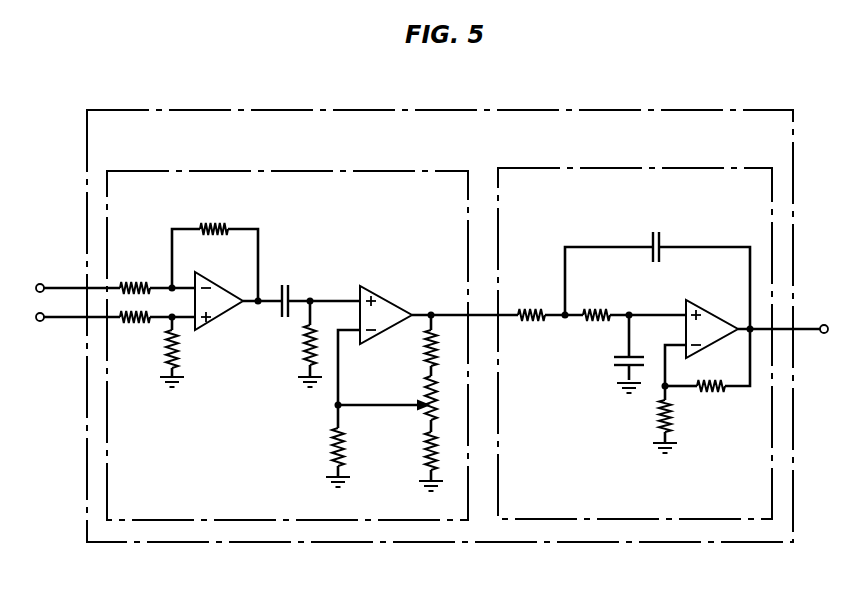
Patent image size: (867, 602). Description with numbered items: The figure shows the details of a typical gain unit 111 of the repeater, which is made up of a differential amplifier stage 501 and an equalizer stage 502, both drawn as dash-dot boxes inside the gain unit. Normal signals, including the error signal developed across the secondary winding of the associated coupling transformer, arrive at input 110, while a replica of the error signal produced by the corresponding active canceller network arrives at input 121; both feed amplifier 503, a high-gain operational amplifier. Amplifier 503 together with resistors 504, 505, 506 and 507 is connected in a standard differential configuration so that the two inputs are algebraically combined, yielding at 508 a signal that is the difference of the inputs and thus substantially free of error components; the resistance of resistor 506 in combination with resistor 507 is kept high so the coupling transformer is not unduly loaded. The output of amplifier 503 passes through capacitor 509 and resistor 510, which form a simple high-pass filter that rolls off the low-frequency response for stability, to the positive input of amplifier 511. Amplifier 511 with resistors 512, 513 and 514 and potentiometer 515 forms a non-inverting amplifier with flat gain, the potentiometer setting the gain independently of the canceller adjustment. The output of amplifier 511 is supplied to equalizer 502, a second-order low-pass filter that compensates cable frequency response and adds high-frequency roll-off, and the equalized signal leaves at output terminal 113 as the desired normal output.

The gain unit 111 is at (642, 109).
The differential amplifier stage 501 is at (208, 170).
The equalizer stage 502 is at (665, 168).
The input 121 is at (40, 283).
The input 110 is at (41, 322).
The output terminal 113 is at (821, 324).
The amplifier 503 is at (215, 318).
The resistor 504 is at (132, 282).
The resistor 505 is at (222, 226).
The resistor 506 is at (134, 325).
The resistor 507 is at (179, 362).
The output 508 is at (277, 292).
The capacitor 509 is at (293, 298).
The resistor 510 is at (298, 350).
The amplifier 511 is at (388, 300).
The resistor 512 is at (421, 354).
The resistor 513 is at (331, 447).
The resistor 514 is at (423, 451).
The potentiometer 515 is at (424, 397).